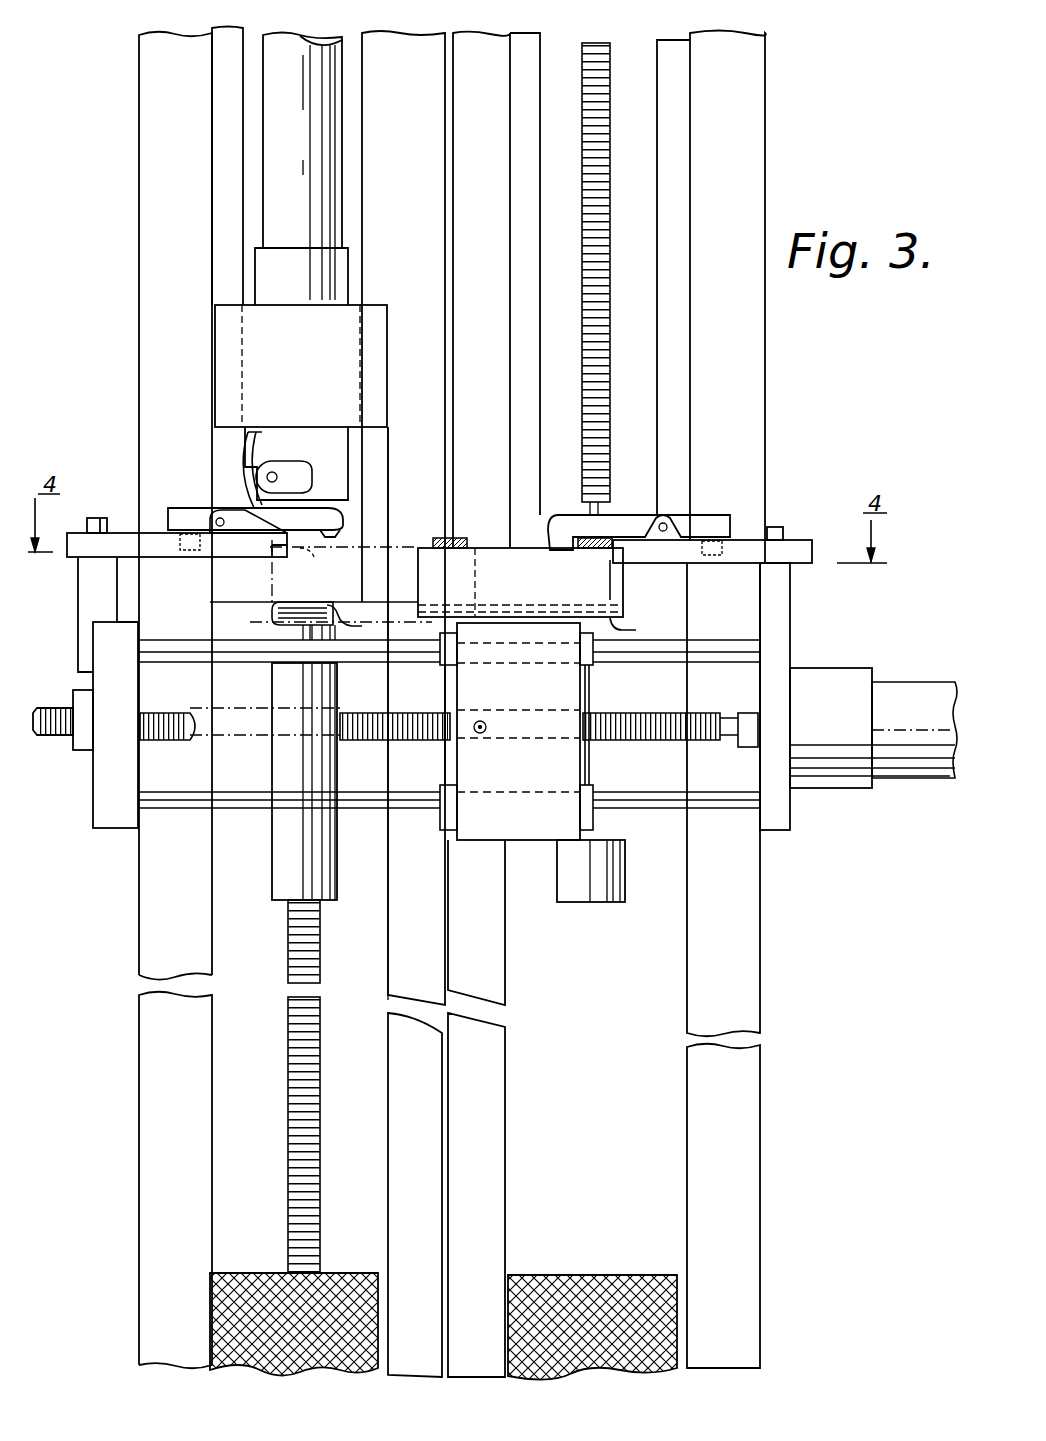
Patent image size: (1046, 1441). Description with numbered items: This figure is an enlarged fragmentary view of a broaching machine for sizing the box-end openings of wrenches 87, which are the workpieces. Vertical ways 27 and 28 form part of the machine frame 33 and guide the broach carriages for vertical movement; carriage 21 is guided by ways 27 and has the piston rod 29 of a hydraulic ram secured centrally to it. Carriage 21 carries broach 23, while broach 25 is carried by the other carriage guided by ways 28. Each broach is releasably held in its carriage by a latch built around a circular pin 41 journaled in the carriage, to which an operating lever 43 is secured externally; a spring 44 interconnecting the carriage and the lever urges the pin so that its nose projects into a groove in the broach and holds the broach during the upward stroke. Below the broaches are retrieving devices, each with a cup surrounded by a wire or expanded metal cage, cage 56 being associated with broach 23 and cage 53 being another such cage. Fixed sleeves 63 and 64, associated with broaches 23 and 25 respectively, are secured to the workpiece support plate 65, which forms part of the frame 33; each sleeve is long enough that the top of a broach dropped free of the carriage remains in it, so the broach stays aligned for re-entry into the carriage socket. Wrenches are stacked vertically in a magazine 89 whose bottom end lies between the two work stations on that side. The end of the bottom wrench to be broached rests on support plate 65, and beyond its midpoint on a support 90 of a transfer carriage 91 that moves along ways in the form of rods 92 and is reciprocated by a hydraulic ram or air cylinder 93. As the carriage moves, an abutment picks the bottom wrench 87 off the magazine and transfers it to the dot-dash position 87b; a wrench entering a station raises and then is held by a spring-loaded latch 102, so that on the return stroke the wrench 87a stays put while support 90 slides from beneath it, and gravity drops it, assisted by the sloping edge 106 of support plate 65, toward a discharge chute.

The carriage 21 is at (305, 343).
The broach 23 is at (303, 1133).
The broach 25 is at (607, 372).
The ways 27 is at (380, 180).
The ways 28 is at (668, 108).
The piston rod 29 is at (277, 93).
The machine frame 33 is at (767, 1012).
The circular pin 41 is at (275, 475).
The operating lever 43 is at (228, 495).
The spring 44 is at (265, 440).
The cage 53 is at (603, 1280).
The cage 56 is at (230, 1297).
The sleeve 63 is at (277, 890).
The sleeve 64 is at (620, 885).
The workpiece support plate 65 is at (250, 597).
The wrench 87 is at (458, 542).
The wrench 87a is at (302, 550).
The wrench 87b is at (566, 552).
The magazine 89 is at (478, 53).
The support 90 is at (277, 622).
The transfer carriage 91 is at (357, 850).
The rods 92 is at (193, 652).
The hydraulic ram or air cylinder 93 is at (935, 718).
The spring-loaded latch 102 is at (330, 520).
The sloping edge 106 is at (502, 623).